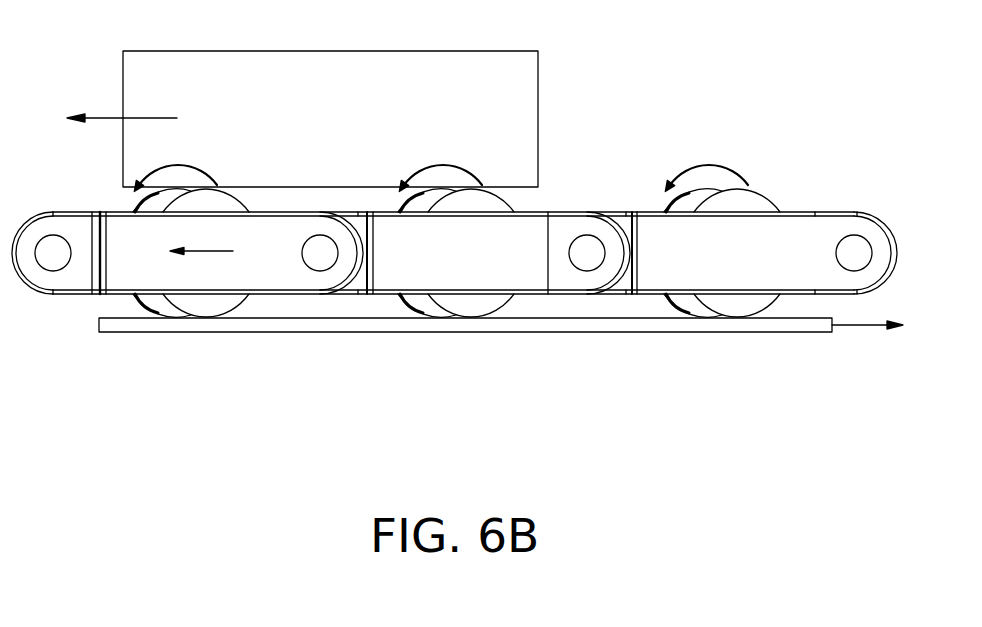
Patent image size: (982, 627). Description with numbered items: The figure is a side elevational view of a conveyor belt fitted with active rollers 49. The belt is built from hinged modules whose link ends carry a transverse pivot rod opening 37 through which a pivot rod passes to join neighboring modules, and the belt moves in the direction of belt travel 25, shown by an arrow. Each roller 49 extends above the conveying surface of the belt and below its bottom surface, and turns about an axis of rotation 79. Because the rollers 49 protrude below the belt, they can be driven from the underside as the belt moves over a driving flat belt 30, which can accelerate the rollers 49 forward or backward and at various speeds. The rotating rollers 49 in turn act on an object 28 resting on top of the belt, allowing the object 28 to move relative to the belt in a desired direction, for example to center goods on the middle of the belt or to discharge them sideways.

The object 28 is at (518, 80).
The axis of rotation 79 is at (715, 160).
The rollers 49 is at (745, 204).
The transverse pivot rod opening 37 is at (585, 256).
The direction of belt travel 25 is at (236, 257).
The driving flat belt 30 is at (498, 325).